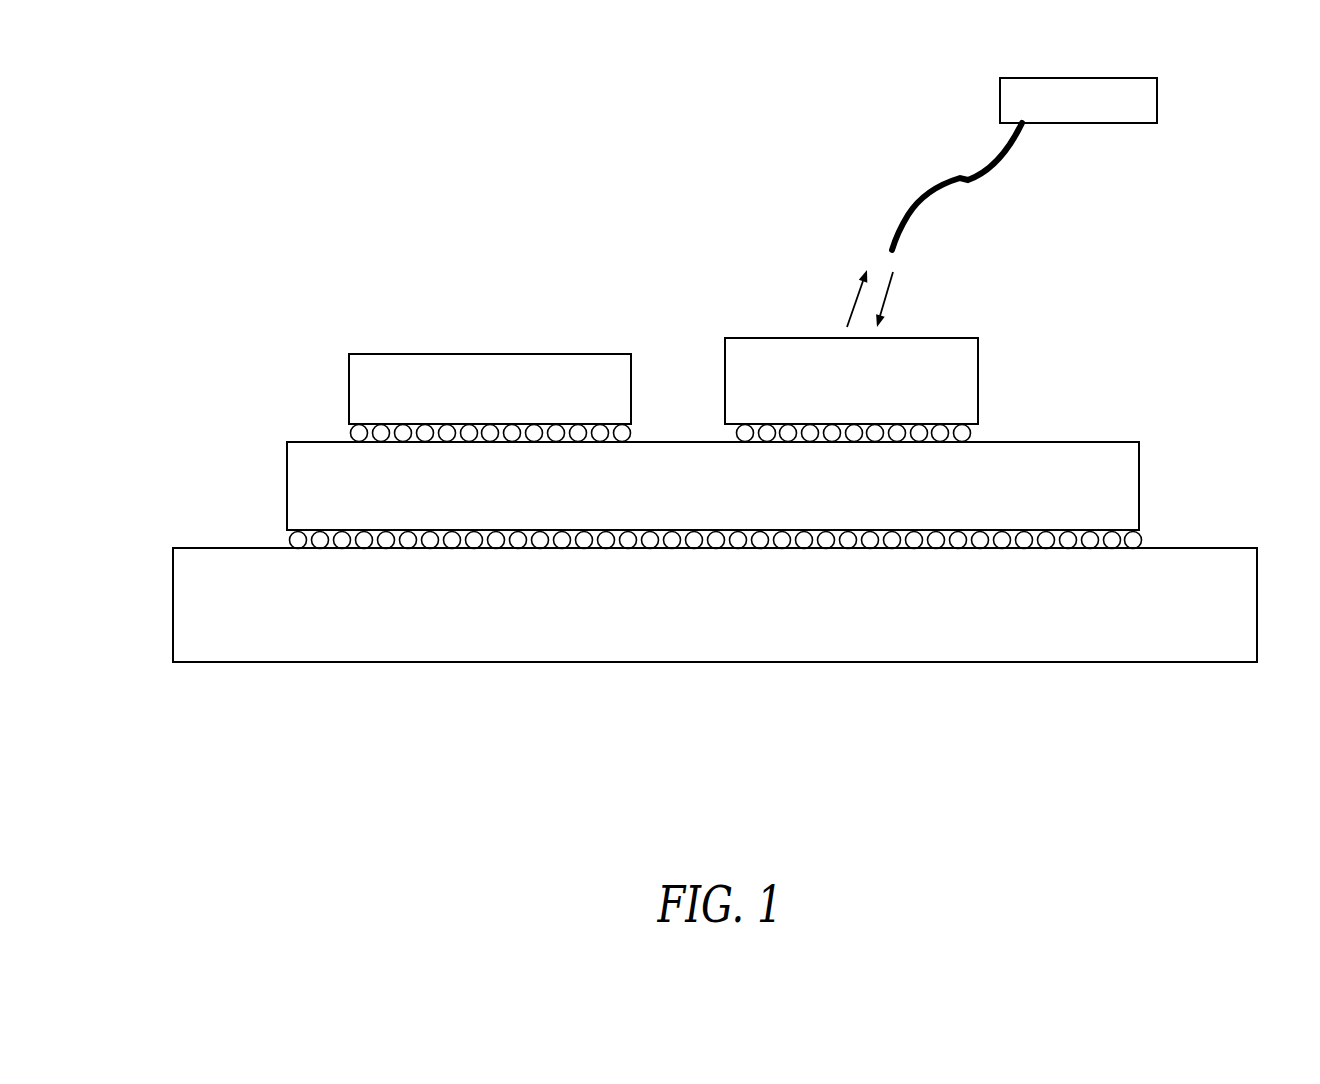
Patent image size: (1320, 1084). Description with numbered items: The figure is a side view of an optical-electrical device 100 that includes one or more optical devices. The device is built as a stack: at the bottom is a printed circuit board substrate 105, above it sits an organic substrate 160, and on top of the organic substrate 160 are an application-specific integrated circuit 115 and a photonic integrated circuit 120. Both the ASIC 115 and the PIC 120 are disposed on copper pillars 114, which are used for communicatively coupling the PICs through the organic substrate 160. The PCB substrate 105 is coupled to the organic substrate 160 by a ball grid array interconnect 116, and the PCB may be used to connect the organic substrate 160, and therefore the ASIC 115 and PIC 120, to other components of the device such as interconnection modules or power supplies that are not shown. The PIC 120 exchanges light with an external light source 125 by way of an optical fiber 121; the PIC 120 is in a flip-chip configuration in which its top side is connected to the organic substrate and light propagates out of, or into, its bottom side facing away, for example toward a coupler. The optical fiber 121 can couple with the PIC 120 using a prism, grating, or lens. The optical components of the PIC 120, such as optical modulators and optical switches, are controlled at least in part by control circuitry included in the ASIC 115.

The optical-electrical device 100 is at (356, 183).
The printed circuit board (PCB) substrate 105 is at (695, 635).
The copper pillars 114 is at (339, 428).
The application-specific integrated circuit (ASIC) 115 is at (471, 421).
The ball grid array (BGA) interconnect 116 is at (266, 529).
The photonic integrated circuit (PIC) 120 is at (832, 411).
The optical fiber 121 is at (925, 188).
The external light source 125 is at (1059, 114).
The organic substrate 160 is at (695, 517).